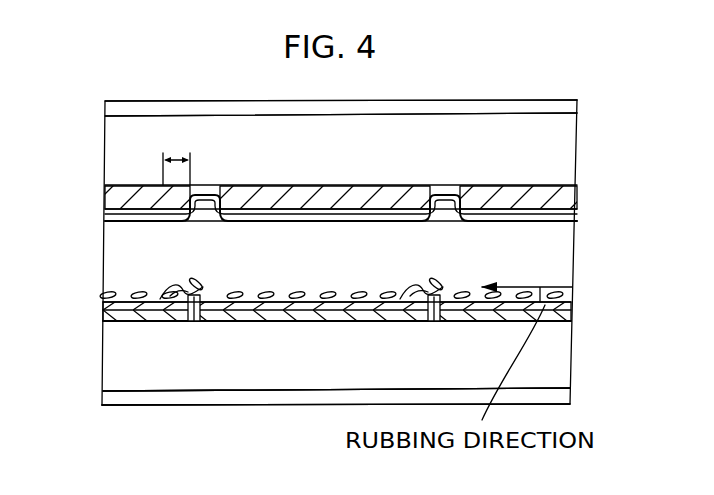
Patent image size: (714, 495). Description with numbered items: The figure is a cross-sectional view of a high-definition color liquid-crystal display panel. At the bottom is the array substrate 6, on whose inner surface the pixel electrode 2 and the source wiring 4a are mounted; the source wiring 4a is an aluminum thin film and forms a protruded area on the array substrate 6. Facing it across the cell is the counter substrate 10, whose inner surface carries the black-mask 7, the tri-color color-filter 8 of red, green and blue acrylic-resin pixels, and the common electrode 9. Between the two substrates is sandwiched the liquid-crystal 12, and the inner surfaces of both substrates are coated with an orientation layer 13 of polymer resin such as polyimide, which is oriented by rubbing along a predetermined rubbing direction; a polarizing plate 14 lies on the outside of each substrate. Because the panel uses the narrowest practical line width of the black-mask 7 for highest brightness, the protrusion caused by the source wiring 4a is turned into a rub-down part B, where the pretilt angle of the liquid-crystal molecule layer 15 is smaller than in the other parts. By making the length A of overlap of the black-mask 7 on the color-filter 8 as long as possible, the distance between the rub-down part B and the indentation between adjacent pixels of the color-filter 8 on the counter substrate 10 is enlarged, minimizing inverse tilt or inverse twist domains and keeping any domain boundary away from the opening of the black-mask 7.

The pixel electrode 2 is at (550, 318).
The source wiring 4a is at (190, 323).
The array substrate 6 is at (113, 373).
The black-mask 7 is at (163, 187).
The color-filter 8 is at (117, 198).
The common electrode 9 is at (553, 207).
The counter substrate 10 is at (123, 143).
The liquid-crystal 12 is at (545, 258).
The orientation layer 13 is at (577, 215).
The polarizing plate 14 is at (563, 106).
The liquid-crystal molecule layer 15 is at (123, 297).
The length of overlap A is at (176, 159).
The rub-down part B is at (175, 282).